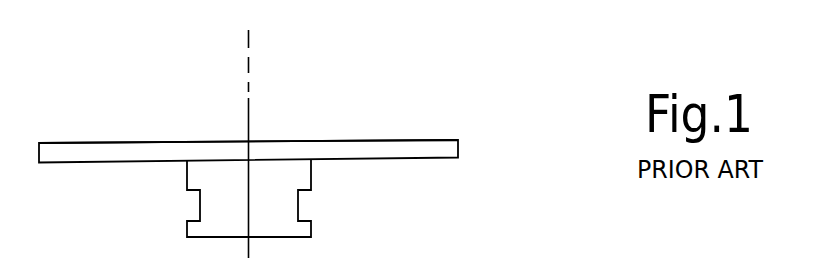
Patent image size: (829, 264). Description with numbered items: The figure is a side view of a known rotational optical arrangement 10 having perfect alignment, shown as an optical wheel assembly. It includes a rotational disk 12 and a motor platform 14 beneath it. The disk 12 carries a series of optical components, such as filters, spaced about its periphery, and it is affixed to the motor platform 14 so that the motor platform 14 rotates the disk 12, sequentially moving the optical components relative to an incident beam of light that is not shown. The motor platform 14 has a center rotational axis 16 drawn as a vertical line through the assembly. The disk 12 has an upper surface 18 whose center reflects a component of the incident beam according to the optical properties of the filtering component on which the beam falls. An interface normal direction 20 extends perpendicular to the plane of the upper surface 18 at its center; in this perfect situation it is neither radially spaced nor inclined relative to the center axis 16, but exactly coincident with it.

The rotational optical arrangement 10 is at (372, 84).
The rotational disk 12 is at (407, 150).
The motor platform 14 is at (195, 177).
The center rotational axis 16 is at (248, 43).
The upper surface 18 is at (438, 139).
The interface normal direction 20 is at (248, 109).